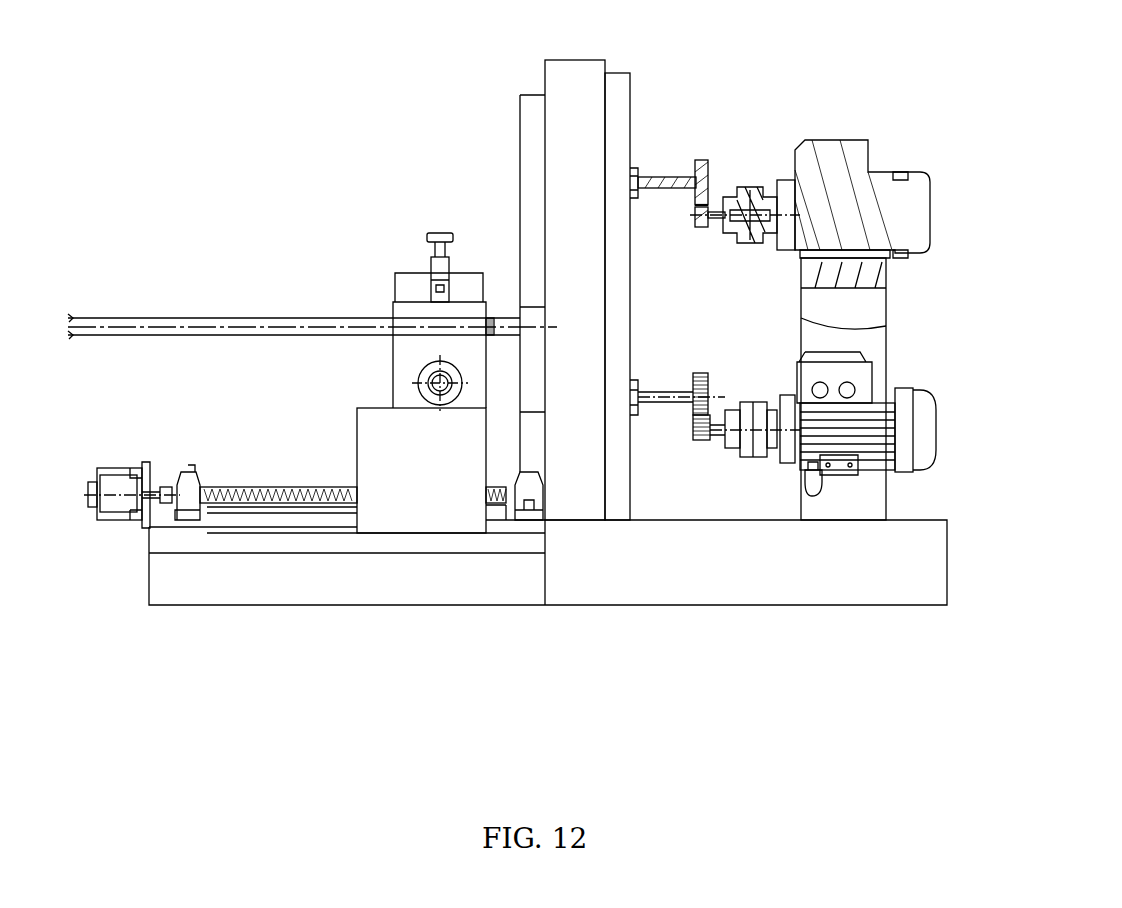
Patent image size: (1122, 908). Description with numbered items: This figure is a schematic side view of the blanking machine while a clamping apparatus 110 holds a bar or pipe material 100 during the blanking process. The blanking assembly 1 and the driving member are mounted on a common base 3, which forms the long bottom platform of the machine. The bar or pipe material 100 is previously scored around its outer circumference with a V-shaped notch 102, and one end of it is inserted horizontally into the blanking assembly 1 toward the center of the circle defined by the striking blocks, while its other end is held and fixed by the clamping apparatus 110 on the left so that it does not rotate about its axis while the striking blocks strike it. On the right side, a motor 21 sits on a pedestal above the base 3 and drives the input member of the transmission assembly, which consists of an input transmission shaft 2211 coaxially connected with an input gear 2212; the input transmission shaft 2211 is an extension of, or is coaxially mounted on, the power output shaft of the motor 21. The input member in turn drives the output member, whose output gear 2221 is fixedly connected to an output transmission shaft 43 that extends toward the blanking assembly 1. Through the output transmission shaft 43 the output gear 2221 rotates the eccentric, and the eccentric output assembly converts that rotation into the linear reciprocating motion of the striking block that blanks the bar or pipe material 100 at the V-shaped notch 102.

The blanking assembly 1 is at (555, 95).
The base 3 is at (920, 553).
The motor 21 is at (920, 212).
The output transmission shaft 43 is at (677, 192).
The bar or pipe material 100 is at (335, 320).
The V-shaped notch 102 is at (495, 325).
The clamping apparatus 110 is at (358, 428).
The input transmission shaft 2211 is at (715, 213).
The input gear 2212 is at (702, 228).
The output gear 2221 is at (700, 162).